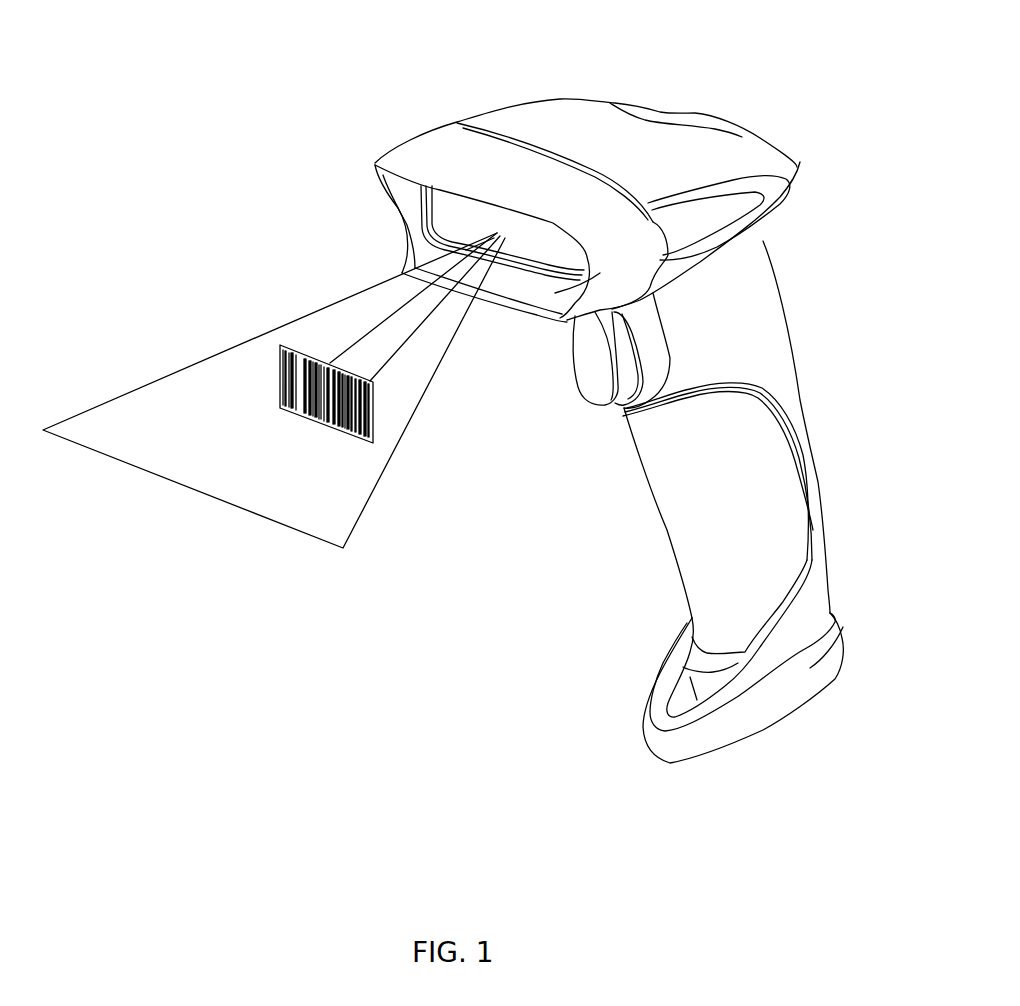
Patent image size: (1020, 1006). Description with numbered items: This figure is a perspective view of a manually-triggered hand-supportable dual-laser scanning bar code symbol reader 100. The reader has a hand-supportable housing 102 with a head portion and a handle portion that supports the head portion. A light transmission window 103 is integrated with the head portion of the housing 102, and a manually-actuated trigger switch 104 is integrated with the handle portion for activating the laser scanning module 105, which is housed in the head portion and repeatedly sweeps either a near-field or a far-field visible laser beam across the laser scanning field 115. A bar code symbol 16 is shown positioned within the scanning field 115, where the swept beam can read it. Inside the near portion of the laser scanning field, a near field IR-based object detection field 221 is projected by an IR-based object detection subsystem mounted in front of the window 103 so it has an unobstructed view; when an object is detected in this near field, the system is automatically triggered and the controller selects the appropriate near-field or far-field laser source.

The laser scanning bar code symbol reader 100 is at (793, 117).
The hand-supportable housing 102 is at (800, 472).
The light transmission window 103 is at (463, 210).
The manually-actuated trigger switch 104 is at (588, 369).
The laser scanning module 105 is at (614, 162).
The bar code symbol 16 is at (360, 413).
The laser scanning field 115 is at (193, 491).
The near field IR-based object detection field 221 is at (396, 353).